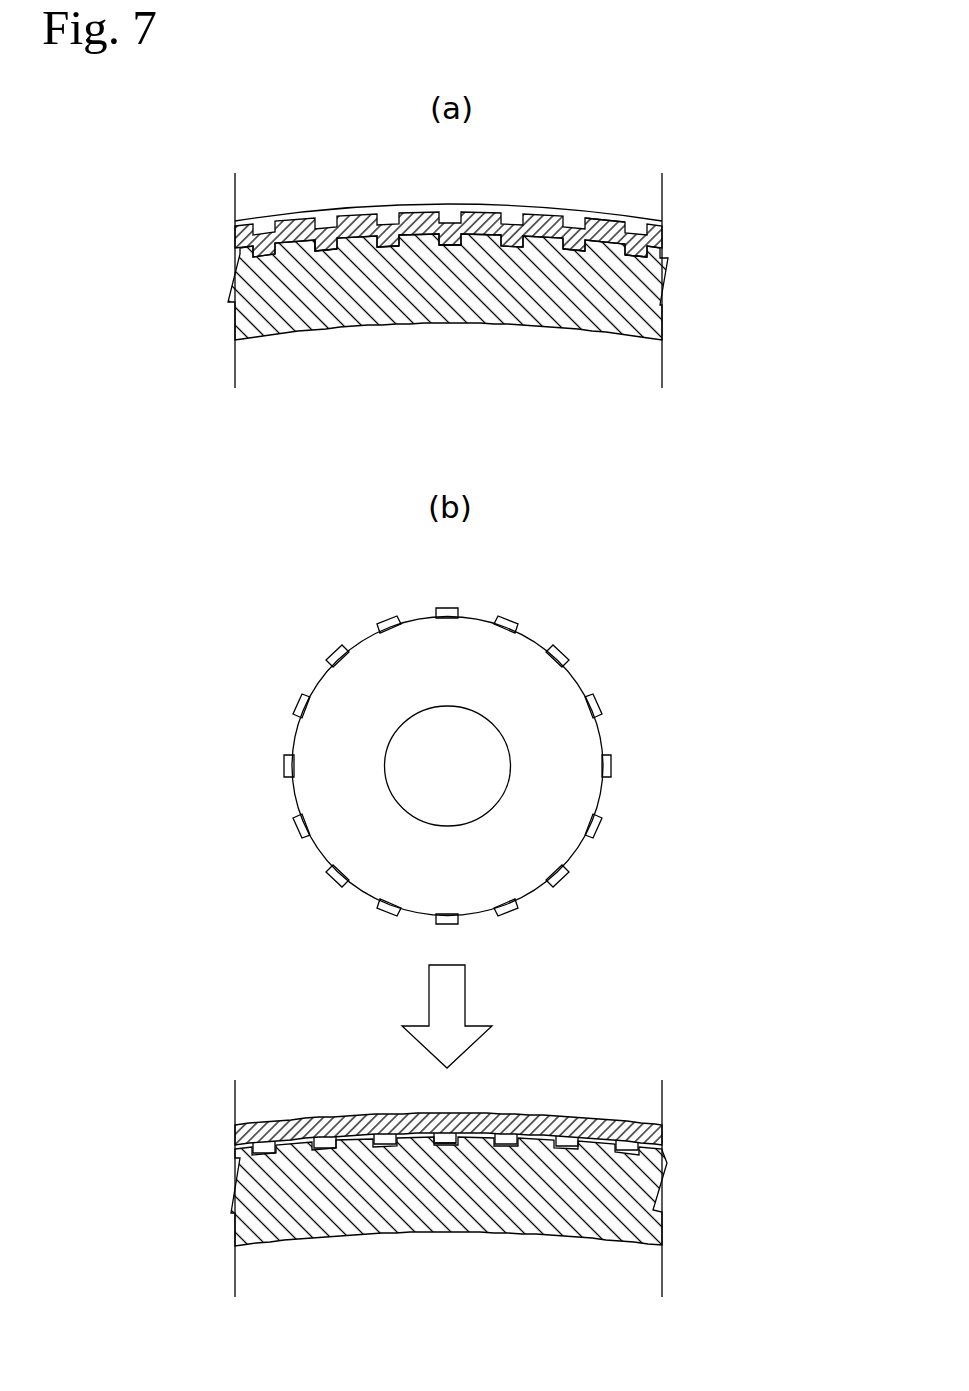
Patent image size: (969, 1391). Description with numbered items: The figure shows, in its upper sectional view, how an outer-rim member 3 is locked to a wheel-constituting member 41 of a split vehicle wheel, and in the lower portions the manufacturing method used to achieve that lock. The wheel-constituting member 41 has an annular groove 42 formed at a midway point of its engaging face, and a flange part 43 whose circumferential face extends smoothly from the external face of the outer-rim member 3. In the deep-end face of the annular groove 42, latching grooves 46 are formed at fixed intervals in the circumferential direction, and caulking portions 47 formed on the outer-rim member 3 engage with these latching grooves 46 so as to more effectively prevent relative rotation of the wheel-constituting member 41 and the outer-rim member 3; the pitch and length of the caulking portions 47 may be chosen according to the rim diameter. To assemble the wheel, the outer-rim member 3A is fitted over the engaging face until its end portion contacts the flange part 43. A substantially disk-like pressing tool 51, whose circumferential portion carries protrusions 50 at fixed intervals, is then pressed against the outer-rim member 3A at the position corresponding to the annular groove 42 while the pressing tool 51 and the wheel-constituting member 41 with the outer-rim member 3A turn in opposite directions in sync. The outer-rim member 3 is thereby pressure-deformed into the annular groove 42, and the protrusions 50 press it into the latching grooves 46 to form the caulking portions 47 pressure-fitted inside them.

The outer-rim member 3 is at (536, 199).
The outer-rim member 3A is at (535, 1101).
The wheel-constituting member 41 is at (620, 349).
The annular groove 42 is at (310, 234).
The flange part 43 is at (602, 218).
The latching grooves 46 is at (467, 233).
The caulking portions 47 is at (625, 252).
The protrusions 50 is at (606, 757).
The pressing tool 51 is at (600, 625).